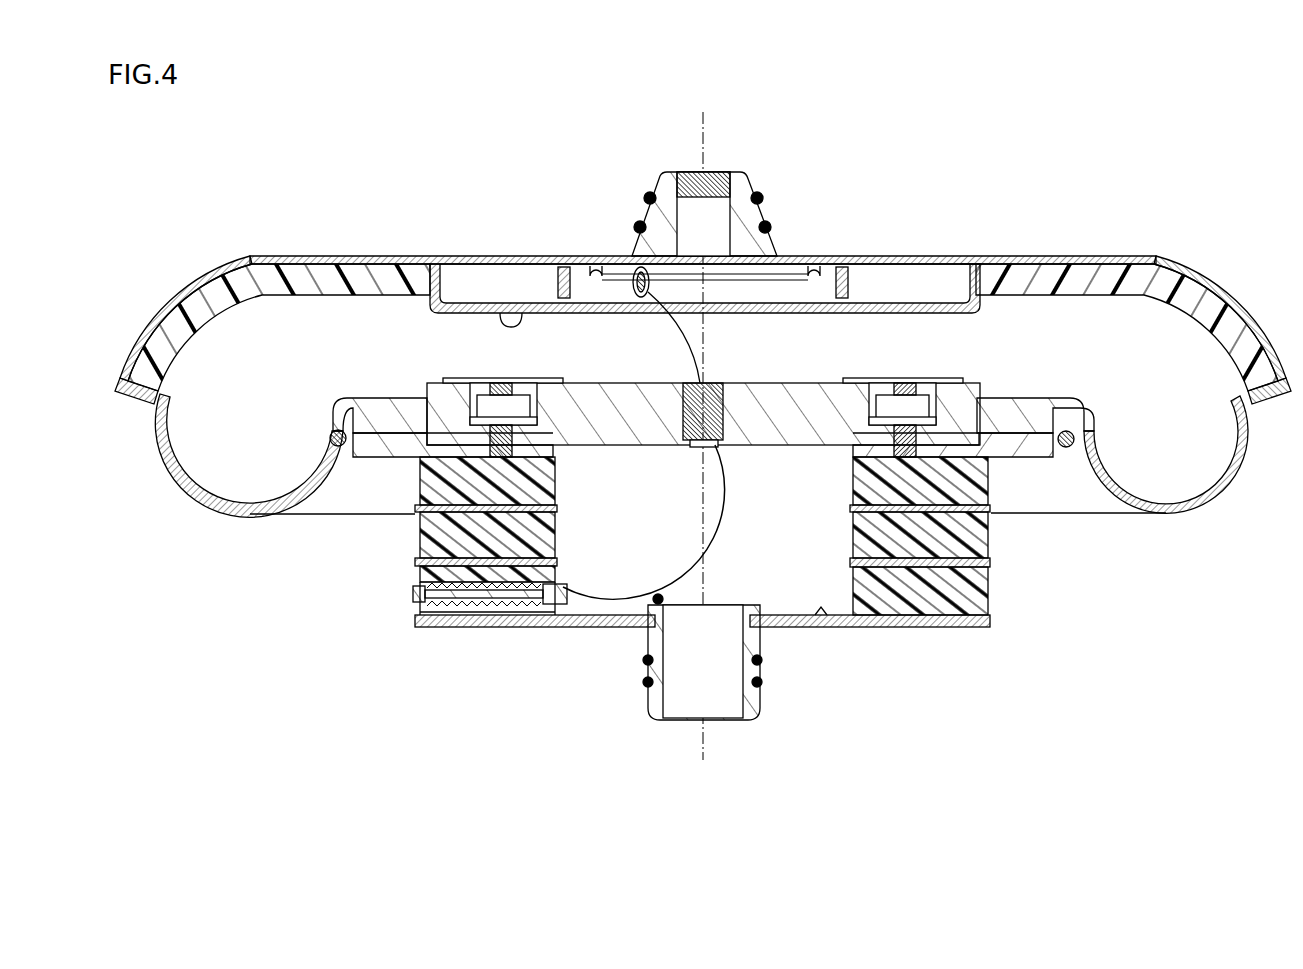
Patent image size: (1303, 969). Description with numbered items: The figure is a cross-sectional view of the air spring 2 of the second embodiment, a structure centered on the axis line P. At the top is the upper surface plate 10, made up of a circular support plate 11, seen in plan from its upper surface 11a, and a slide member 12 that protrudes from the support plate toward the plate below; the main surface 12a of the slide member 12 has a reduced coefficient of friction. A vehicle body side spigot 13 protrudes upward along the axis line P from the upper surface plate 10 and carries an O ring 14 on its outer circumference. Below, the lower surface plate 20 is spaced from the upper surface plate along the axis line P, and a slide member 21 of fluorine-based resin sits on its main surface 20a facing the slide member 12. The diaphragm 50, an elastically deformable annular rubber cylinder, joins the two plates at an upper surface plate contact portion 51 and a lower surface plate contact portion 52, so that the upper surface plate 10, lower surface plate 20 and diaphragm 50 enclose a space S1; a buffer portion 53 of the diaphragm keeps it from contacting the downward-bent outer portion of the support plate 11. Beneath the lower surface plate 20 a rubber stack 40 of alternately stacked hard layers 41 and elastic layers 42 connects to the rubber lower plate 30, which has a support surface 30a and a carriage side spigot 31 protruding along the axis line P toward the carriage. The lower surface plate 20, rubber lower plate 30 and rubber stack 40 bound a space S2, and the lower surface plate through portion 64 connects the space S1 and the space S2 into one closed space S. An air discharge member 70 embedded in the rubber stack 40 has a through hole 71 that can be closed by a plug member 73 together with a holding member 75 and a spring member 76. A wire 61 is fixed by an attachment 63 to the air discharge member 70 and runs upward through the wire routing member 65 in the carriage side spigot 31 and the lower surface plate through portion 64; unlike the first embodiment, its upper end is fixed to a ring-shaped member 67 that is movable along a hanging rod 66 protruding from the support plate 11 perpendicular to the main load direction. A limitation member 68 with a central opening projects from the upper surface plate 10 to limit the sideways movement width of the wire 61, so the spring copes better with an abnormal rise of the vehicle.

The air spring 2 is at (1075, 158).
The upper surface plate 10 is at (937, 212).
The support plate 11 is at (268, 258).
The upper surface 11a is at (970, 258).
The slide member 12 is at (472, 300).
The main surface 12a is at (505, 320).
The vehicle body side spigot 13 is at (740, 170).
The O ring 14 is at (762, 196).
The lower surface plate 20 is at (557, 380).
The main surface 20a is at (563, 412).
The slide member 21 is at (887, 380).
The rubber lower plate 30 is at (883, 628).
The support surface 30a is at (822, 616).
The carriage side spigot 31 is at (761, 683).
The rubber stack 40 is at (746, 536).
The hard layer 41 is at (726, 539).
The elastic layer 42 is at (960, 590).
The diaphragm 50 is at (241, 512).
The upper surface plate contact portion 51 is at (412, 280).
The lower surface plate contact portion 52 is at (403, 413).
The buffer portion 53 is at (130, 402).
The wire 61 is at (722, 528).
The attachment 63 is at (570, 594).
The lower surface plate through portion 64 is at (706, 425).
The wire routing member 65 is at (654, 603).
The hanging rod 66 is at (616, 283).
The ring-shaped member 67 is at (622, 296).
The limitation member 68 is at (577, 380).
The air discharge member 70 is at (488, 645).
The through hole 71 is at (510, 603).
The plug member 73 is at (553, 605).
The holding member 75 is at (421, 603).
The spring member 76 is at (410, 668).
The axis line P is at (702, 424).
The closed space S is at (965, 700).
The space S1 is at (1158, 450).
The space S2 is at (955, 624).